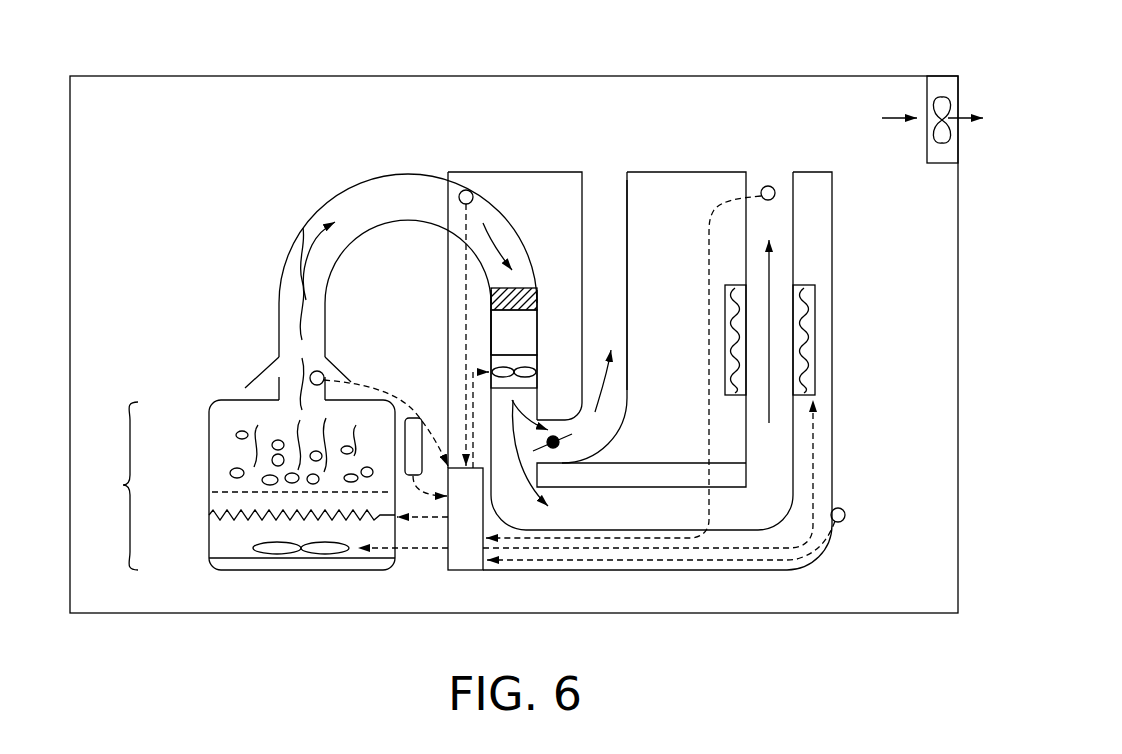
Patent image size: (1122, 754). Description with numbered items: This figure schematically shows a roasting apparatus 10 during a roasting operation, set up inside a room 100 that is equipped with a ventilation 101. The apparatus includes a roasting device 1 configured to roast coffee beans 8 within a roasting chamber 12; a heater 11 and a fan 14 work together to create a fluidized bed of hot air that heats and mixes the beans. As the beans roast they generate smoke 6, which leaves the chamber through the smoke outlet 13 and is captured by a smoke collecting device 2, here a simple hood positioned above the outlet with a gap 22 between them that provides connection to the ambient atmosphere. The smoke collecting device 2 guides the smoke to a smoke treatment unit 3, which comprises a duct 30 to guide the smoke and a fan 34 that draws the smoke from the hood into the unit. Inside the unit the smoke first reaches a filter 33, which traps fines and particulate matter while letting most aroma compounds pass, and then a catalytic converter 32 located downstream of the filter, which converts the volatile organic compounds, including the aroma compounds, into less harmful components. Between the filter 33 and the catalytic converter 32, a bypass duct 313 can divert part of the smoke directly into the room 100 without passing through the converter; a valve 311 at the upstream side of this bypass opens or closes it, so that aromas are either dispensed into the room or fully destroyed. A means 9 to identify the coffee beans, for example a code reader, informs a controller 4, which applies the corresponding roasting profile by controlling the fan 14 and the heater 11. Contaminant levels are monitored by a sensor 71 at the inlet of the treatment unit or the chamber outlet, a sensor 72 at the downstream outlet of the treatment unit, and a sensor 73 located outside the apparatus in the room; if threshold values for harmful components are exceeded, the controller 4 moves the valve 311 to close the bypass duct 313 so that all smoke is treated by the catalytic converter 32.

The room 100 is at (808, 75).
The ventilation 101 is at (942, 163).
The smoke treatment unit 3 is at (830, 172).
The duct 30 is at (538, 253).
The filter 33 is at (532, 300).
The fan 34 is at (528, 365).
The valve 311 is at (560, 442).
The bypass duct 313 is at (630, 207).
The catalytic converter 32 is at (816, 325).
The sensor 72 is at (776, 193).
The sensor 73 is at (845, 515).
The sensor 71 is at (473, 197).
The smoke 6 is at (295, 279).
The smoke collecting device 2 is at (262, 372).
The gap 22 is at (245, 389).
The roasting apparatus 10 is at (165, 321).
The roasting device 1 is at (116, 486).
The roasting chamber 12 is at (209, 447).
The smoke outlet 13 is at (280, 405).
The coffee beans 8 is at (232, 470).
The heater 11 is at (216, 517).
The fan 14 is at (290, 553).
The means to identify coffee beans 9 is at (413, 417).
The controller 4 is at (466, 571).